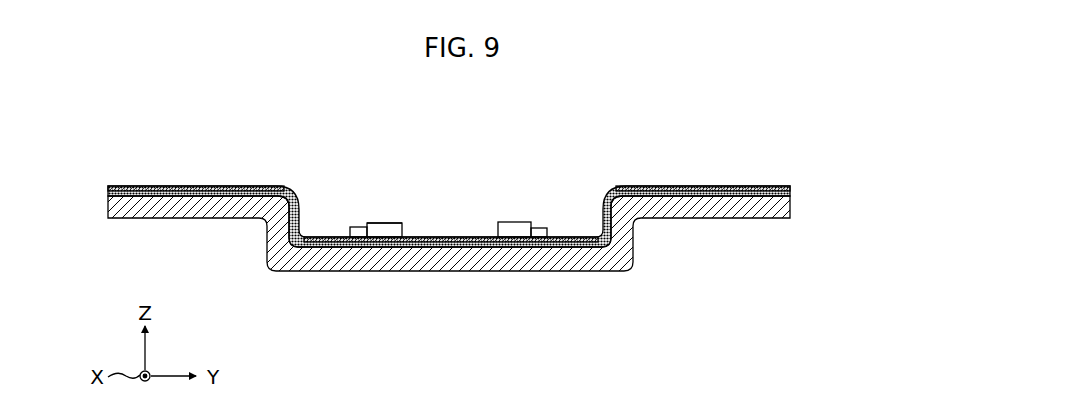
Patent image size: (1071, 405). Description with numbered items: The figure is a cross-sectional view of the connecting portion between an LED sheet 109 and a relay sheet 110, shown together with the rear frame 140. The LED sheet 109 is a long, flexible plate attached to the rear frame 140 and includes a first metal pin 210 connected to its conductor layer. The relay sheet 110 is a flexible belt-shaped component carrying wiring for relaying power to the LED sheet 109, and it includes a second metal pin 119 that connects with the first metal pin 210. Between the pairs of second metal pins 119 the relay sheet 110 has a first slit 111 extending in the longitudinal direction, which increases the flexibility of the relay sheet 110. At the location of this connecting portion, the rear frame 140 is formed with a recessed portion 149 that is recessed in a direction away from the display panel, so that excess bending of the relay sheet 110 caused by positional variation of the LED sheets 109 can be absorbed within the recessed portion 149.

The LED sheet 109 is at (242, 185).
The relay sheet 110 is at (410, 236).
The first slit 111 is at (457, 237).
The second metal pin 119 is at (390, 223).
The rear frame 140 is at (562, 271).
The recessed portion 149 is at (568, 210).
The first metal pin 210 is at (358, 227).